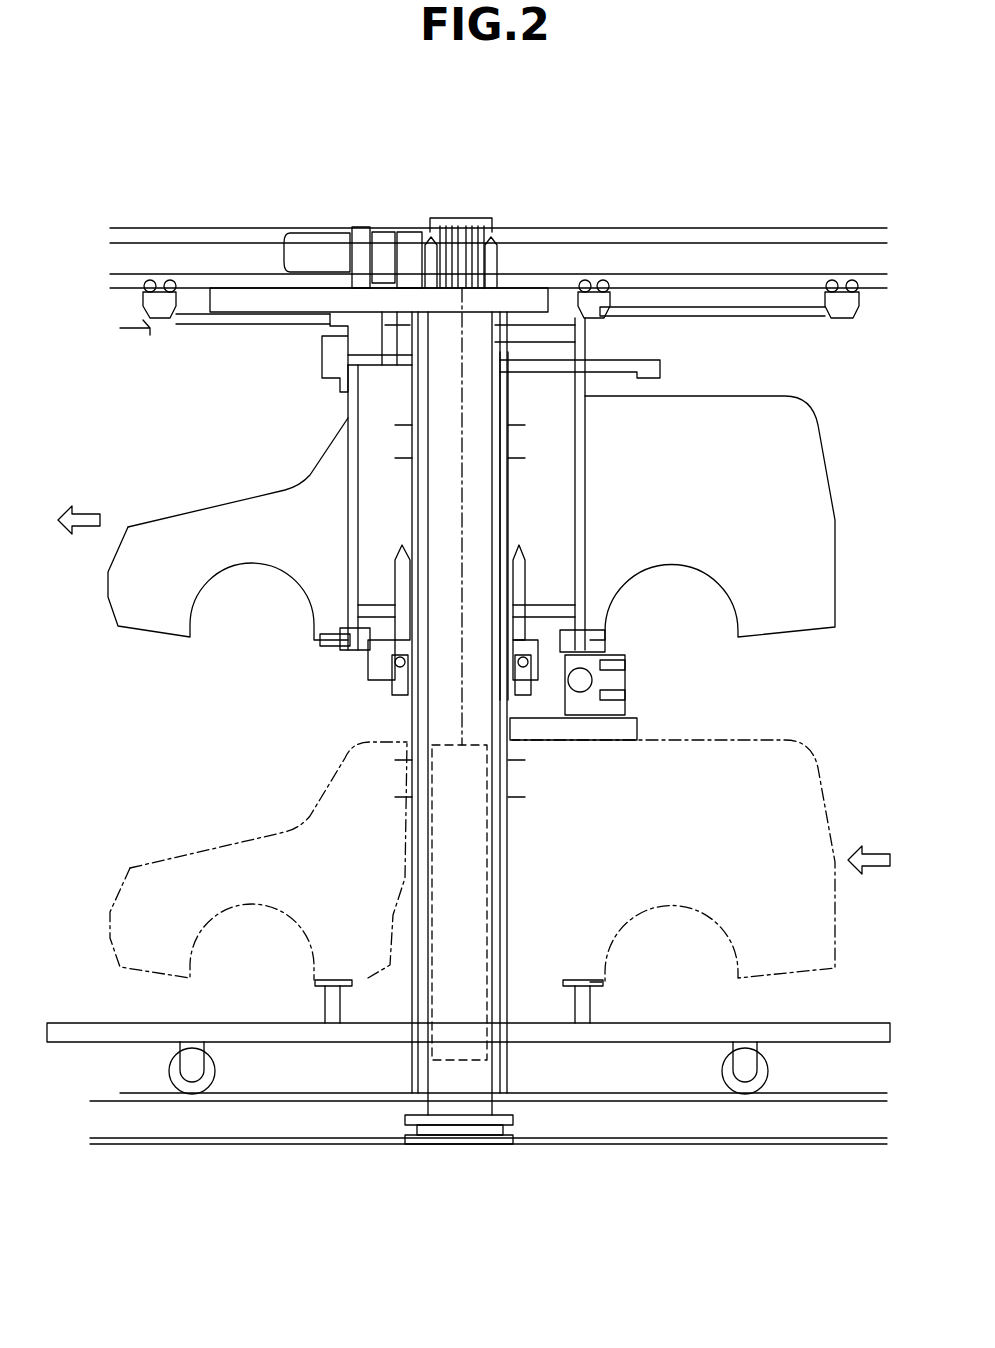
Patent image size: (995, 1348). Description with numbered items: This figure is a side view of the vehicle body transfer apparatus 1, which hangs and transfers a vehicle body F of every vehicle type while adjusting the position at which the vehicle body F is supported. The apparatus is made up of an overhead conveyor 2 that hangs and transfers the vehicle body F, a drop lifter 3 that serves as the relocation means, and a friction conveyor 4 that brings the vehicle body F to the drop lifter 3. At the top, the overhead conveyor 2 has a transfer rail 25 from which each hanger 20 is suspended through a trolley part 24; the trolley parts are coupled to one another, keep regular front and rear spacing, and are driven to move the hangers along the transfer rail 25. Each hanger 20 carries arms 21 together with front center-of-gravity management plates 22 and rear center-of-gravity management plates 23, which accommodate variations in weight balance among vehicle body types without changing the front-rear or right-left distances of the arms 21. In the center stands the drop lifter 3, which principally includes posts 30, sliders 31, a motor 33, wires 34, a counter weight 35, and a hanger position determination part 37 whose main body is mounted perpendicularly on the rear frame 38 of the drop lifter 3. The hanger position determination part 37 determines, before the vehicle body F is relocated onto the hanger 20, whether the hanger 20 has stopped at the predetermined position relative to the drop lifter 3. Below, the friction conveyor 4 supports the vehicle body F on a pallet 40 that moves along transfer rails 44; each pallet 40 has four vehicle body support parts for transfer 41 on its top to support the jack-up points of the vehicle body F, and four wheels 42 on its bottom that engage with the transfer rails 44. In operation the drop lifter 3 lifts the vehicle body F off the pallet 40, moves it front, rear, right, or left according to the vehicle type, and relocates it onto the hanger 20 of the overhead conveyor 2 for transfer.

The vehicle body transfer apparatus 1 is at (205, 170).
The overhead conveyor 2 is at (598, 268).
The drop lifter 3 is at (195, 418).
The friction conveyor 4 is at (663, 1108).
The hanger 20 is at (598, 345).
The arm 21 is at (340, 462).
The front center-of-gravity management plate 22 is at (340, 645).
The rear center-of-gravity management plate 23 is at (598, 645).
The trolley part 24 is at (730, 300).
The transfer rail 25 is at (122, 262).
The post 30 is at (445, 712).
The slider 31 is at (400, 577).
The motor 33 is at (320, 245).
The wire 34 is at (455, 518).
The counter weight 35 is at (455, 1005).
The hanger position determination part 37 is at (635, 702).
The rear frame 38 is at (628, 730).
The pallet 40 is at (805, 1035).
The vehicle body support part for transfer 41 is at (316, 1012).
The wheel 42 is at (192, 1094).
The transfer rail 44 is at (120, 1093).
The vehicle body F is at (800, 425).